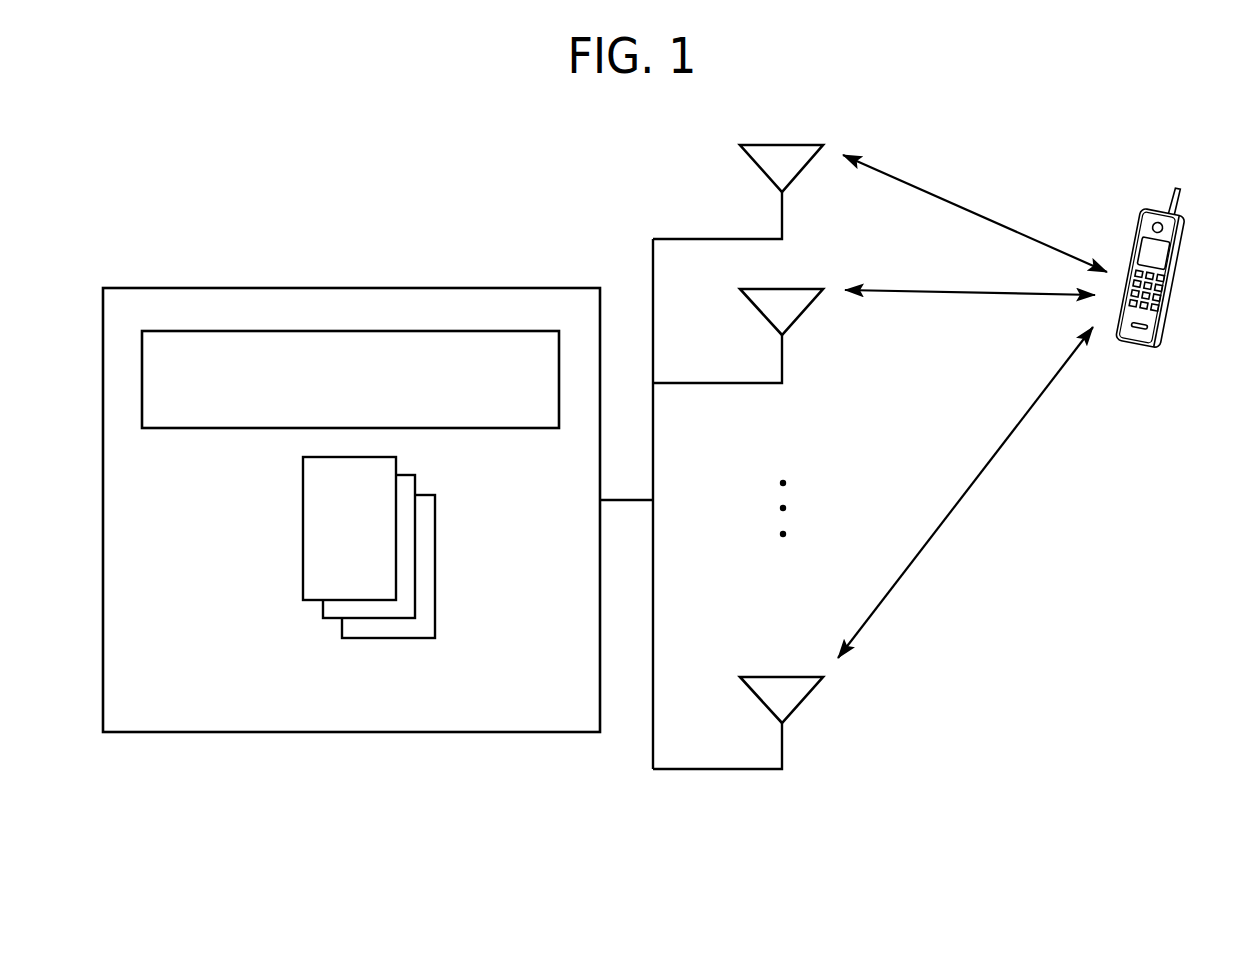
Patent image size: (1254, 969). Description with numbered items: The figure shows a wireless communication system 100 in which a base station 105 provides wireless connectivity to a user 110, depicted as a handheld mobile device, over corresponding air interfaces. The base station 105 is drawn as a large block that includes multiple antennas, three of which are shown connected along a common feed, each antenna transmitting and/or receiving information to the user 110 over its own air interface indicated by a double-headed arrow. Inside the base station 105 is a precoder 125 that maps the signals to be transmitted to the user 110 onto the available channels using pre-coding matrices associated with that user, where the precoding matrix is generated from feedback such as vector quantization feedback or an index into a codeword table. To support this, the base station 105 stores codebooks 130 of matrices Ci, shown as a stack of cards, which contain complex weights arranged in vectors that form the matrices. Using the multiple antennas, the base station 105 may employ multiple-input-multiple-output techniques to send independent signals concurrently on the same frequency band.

The wireless communication system 100 is at (1030, 168).
The base station 105 is at (548, 720).
The user 110 is at (1187, 256).
The precoder 125 is at (492, 429).
The codebooks 130 is at (303, 479).